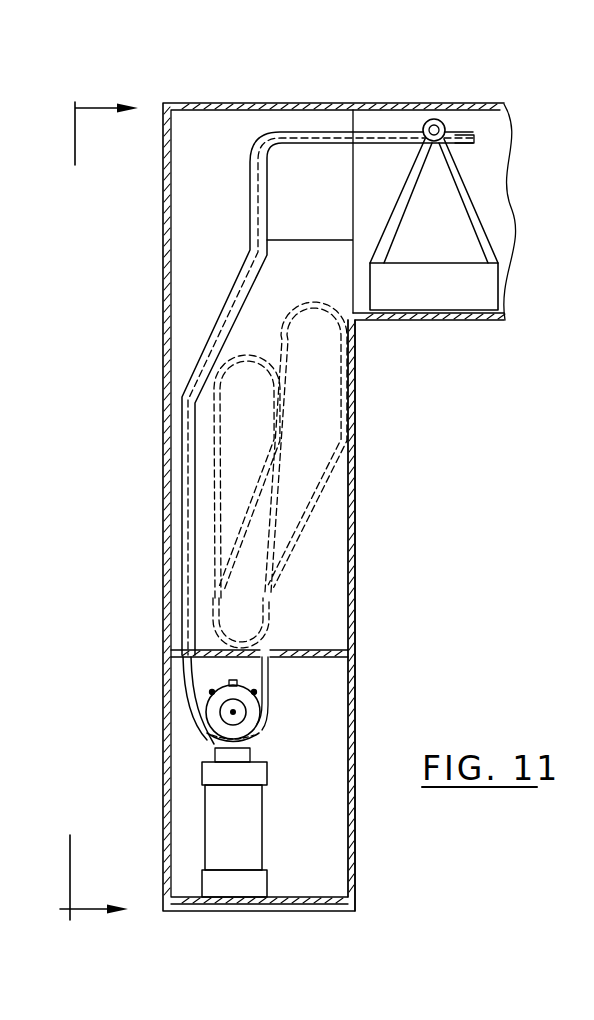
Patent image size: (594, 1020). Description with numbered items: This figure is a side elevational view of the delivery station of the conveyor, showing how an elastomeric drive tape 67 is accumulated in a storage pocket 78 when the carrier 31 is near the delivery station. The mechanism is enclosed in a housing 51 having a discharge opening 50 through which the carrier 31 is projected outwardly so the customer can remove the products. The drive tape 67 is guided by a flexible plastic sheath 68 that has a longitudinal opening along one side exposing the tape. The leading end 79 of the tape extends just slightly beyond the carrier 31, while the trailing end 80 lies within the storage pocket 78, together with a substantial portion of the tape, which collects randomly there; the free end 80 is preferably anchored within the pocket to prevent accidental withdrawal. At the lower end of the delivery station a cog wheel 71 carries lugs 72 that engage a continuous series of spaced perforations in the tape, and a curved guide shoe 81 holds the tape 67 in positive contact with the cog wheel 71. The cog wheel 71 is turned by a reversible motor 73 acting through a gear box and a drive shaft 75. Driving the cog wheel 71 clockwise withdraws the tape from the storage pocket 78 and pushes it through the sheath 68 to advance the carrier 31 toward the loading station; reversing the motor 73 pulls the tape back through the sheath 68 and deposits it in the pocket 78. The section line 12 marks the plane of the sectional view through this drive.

The section line 12 is at (79, 509).
The carrier 31 is at (445, 283).
The discharge opening 50 is at (157, 410).
The housing 51 is at (356, 413).
The elastomeric drive tape 67 is at (456, 137).
The flexible plastic sheath 68 is at (225, 305).
The cog wheel 71 is at (237, 692).
The lug 72 is at (247, 713).
The reversible motor 73 is at (252, 830).
The drive shaft 75 is at (221, 713).
The storage pocket 78 is at (330, 550).
The leading end of tape 79 is at (477, 141).
The trailing end of tape 80 is at (241, 607).
The curved guide shoe 81 is at (254, 741).